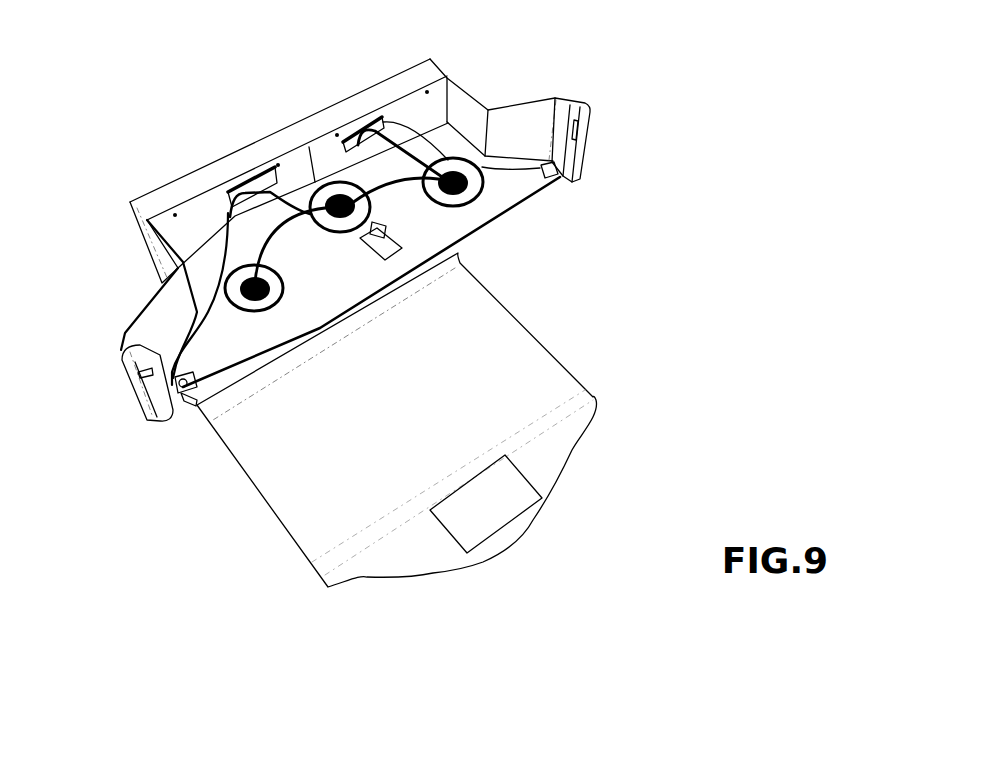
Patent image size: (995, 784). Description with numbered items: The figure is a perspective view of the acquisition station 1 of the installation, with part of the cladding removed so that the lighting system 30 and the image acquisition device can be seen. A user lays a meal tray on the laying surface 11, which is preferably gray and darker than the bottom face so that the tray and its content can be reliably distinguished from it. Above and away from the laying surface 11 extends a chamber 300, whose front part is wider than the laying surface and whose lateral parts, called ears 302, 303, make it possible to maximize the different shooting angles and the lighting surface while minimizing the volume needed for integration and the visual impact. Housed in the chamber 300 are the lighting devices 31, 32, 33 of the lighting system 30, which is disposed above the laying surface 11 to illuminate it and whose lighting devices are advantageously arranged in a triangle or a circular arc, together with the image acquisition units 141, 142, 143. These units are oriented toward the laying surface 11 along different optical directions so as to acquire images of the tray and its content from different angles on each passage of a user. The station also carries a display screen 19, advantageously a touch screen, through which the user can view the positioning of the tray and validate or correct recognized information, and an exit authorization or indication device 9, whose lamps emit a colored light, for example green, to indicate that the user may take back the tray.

The acquisition station 1 is at (662, 240).
The exit authorization or indication device 9 is at (588, 128).
The laying surface 11 is at (535, 348).
The display screen 19 is at (463, 530).
The lighting system 30 is at (547, 95).
The lighting device 31 is at (336, 218).
The lighting device 32 is at (253, 300).
The lighting device 33 is at (452, 170).
The image acquisition unit 141 is at (382, 237).
The image acquisition unit 142 is at (180, 402).
The image acquisition unit 143 is at (552, 180).
The chamber 300 is at (154, 252).
The ear 302 is at (143, 402).
The ear 303 is at (588, 100).